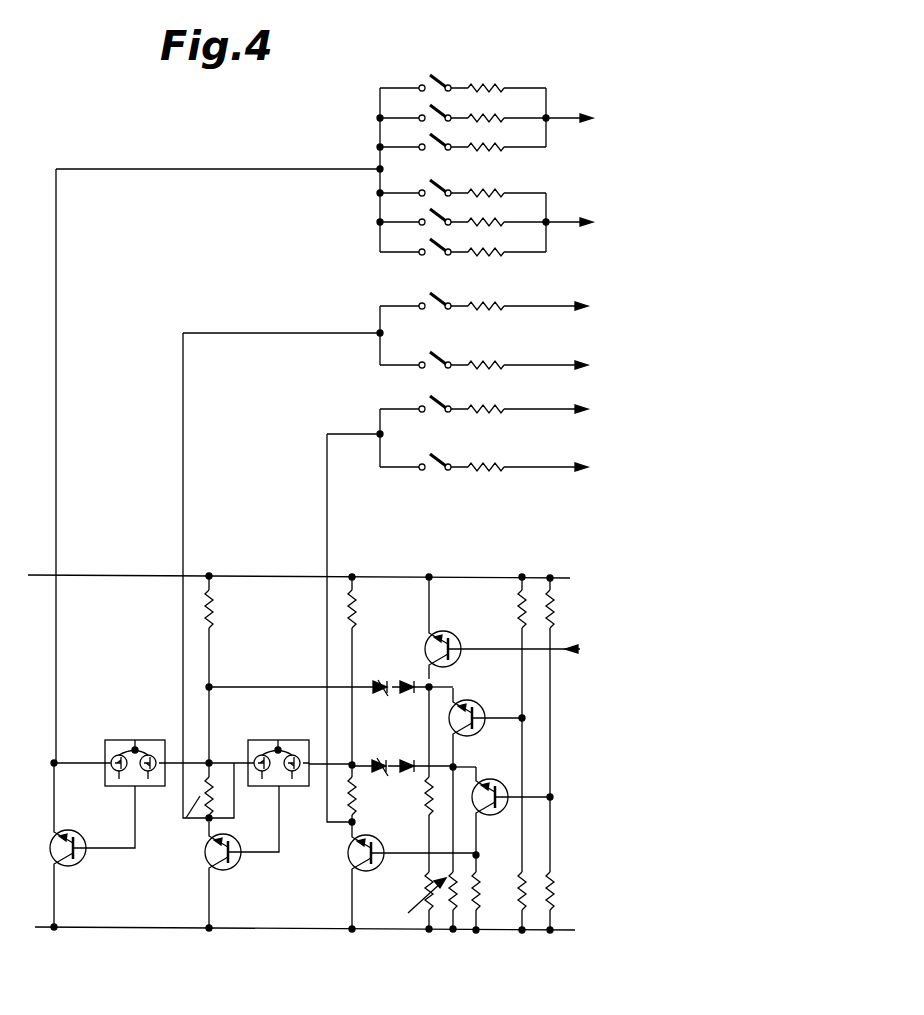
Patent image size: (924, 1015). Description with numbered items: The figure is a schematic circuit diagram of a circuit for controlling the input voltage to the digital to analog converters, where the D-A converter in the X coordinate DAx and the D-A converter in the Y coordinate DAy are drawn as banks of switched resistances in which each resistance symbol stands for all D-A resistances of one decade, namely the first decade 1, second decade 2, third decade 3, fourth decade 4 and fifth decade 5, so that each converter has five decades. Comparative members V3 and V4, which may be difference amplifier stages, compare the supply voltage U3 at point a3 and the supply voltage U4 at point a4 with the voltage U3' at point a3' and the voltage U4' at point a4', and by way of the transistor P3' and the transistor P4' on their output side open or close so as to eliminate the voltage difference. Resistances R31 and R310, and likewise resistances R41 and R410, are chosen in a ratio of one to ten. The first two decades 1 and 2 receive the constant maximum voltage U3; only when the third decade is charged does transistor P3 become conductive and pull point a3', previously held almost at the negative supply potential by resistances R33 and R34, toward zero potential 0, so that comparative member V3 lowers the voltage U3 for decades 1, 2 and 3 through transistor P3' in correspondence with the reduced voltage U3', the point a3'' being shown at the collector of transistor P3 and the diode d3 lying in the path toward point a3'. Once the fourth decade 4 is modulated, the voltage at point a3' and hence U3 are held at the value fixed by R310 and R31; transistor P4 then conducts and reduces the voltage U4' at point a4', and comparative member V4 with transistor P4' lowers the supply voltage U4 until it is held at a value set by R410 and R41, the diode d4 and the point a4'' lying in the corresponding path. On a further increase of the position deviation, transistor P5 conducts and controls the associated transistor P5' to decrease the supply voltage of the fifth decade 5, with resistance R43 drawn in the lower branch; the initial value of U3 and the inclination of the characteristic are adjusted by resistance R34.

The first decade 1 is at (493, 132).
The second decade 2 is at (492, 162).
The third decade 3 is at (492, 191).
The fourth decade 4 is at (494, 326).
The fifth decade 5 is at (494, 428).
The D-A converter in the X coordinate DAx is at (460, 248).
The D-A converter in the Y coordinate DAy is at (460, 330).
The zero potential 0 is at (307, 577).
The resistance R31 is at (226, 669).
The resistance R41 is at (369, 671).
The resistance R310 is at (202, 813).
The resistance R410 is at (370, 793).
The resistance R33 is at (424, 808).
The resistance R34 is at (419, 900).
The resistance R43 is at (450, 920).
The transistor P3 is at (487, 628).
The transistor P4 is at (485, 718).
The transistor P5 is at (511, 804).
The transistor P'3 P3' is at (47, 848).
The transistor P'4 P4' is at (205, 852).
The transistor P'5 P5' is at (344, 853).
The diode d3 is at (393, 679).
The diode d4 is at (402, 756).
The comparative member V3 is at (134, 786).
The comparative member V4 is at (292, 792).
The supply voltage U3 is at (38, 749).
The voltage U'3 U3' is at (197, 749).
The supply voltage U4 is at (162, 807).
The voltage U'4 U4' is at (340, 749).
The point a3 is at (74, 749).
The point a'3 a3' is at (226, 749).
The point a''3 a3'' is at (452, 675).
The point a4 is at (240, 825).
The point a'4 a4' is at (373, 746).
The point a''4 a4'' is at (471, 751).